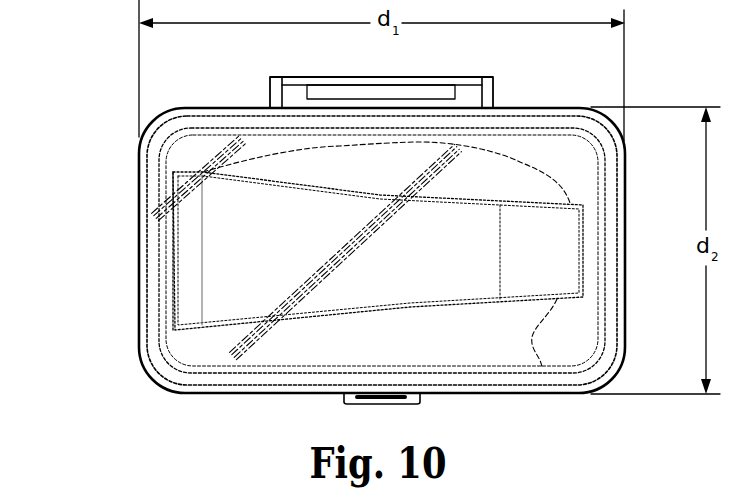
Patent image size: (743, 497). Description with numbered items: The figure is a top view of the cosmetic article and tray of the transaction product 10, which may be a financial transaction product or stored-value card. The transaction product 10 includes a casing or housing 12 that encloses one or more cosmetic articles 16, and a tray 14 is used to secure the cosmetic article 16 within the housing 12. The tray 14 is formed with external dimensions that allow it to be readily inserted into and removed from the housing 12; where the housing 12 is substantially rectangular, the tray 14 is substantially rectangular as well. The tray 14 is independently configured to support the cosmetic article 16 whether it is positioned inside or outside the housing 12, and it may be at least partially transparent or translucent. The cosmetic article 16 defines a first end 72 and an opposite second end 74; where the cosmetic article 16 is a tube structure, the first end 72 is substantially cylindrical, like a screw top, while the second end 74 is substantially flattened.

The transaction product 10 is at (654, 38).
The housing 12 is at (528, 102).
The tray 14 is at (303, 147).
The cosmetic article 16 is at (290, 294).
The first end 72 is at (586, 237).
The second end 74 is at (183, 220).